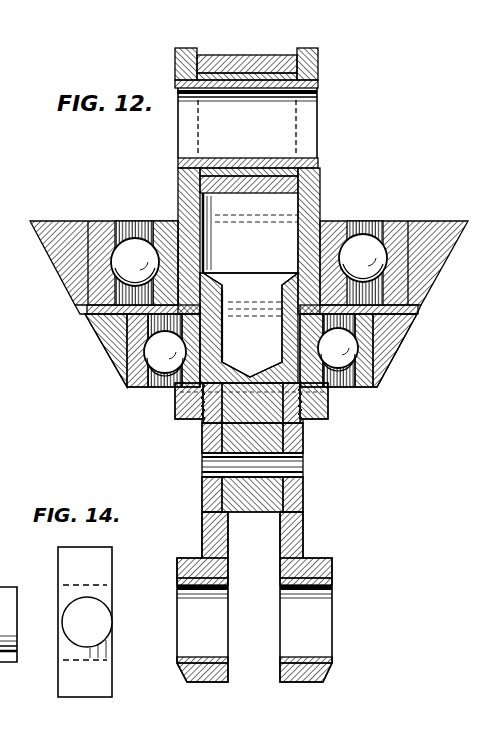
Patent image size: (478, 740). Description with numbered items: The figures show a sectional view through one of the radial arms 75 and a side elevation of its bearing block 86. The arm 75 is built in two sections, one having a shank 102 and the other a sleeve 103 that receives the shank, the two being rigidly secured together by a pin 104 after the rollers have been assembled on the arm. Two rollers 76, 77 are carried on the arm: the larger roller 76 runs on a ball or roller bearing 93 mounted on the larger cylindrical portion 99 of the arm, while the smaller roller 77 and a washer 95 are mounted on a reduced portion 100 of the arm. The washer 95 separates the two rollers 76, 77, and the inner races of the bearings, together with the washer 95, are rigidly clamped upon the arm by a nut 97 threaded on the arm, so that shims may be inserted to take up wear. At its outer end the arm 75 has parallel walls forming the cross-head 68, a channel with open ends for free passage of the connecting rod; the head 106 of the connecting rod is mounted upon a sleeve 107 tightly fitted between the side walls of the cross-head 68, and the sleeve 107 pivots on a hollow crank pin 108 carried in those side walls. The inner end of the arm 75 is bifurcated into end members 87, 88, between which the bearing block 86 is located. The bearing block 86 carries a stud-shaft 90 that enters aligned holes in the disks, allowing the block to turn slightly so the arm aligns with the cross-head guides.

In FIG. 12, the cross-head 68 is at (178, 55).
In FIG. 12, the head of the connecting rod 106 is at (249, 55).
In FIG. 12, the sleeve 107 is at (274, 76).
In FIG. 12, the hollow crank pin 108 is at (320, 85).
In FIG. 12, the radial arm 75 is at (178, 208).
In FIG. 12, the roller 76 is at (66, 224).
In FIG. 12, the ball or roller bearing 93 is at (150, 222).
In FIG. 12, the larger cylindrical portion 99 is at (313, 247).
In FIG. 12, the washer 95 is at (97, 313).
In FIG. 12, the reduced portion 100 is at (290, 340).
In FIG. 12, the roller 77 is at (115, 365).
In FIG. 12, the nut 97 is at (180, 402).
In FIG. 12, the sleeve 103 is at (305, 437).
In FIG. 12, the pin 104 is at (295, 462).
In FIG. 12, the shank 102 is at (274, 489).
In FIG. 12, the end member 87 is at (194, 563).
In FIG. 12, the end member 88 is at (294, 549).
In FIG. 14, the bearing block 86 is at (60, 563).
In FIG. 14, the stud-shaft 90 is at (100, 612).